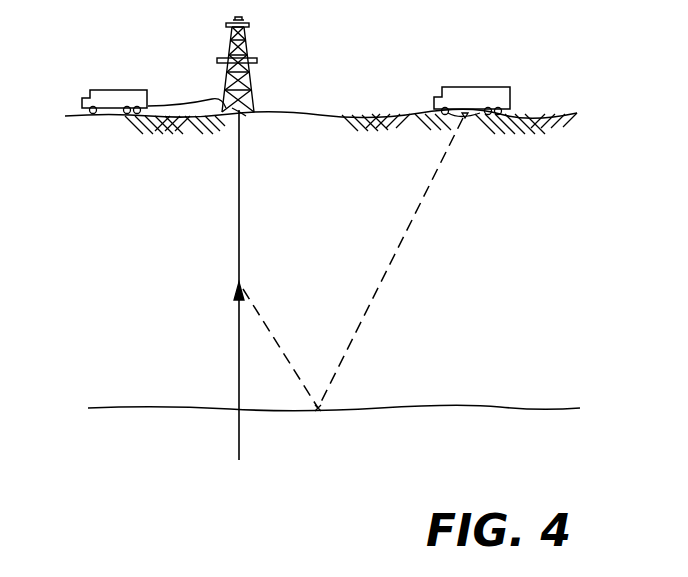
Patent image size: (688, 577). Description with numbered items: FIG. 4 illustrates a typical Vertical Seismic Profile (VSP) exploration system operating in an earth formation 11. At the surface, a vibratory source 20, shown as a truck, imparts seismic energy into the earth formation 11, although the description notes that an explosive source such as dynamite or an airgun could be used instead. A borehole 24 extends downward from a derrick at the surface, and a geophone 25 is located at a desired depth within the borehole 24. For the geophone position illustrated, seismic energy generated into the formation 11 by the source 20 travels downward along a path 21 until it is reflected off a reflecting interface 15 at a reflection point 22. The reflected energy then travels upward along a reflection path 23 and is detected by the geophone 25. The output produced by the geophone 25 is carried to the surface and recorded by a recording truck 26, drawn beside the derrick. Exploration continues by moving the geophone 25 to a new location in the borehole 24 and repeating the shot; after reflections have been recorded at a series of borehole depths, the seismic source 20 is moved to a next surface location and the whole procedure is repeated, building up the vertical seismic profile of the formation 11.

The earth formation 11 is at (147, 238).
The recording truck 26 is at (122, 98).
The vibratory source 20 is at (509, 50).
The borehole 24 is at (240, 233).
The geophone 25 is at (243, 283).
The reflection path 23 is at (272, 338).
The path 21 is at (397, 253).
The reflecting interface 15 is at (382, 408).
The reflection point 22 is at (318, 412).